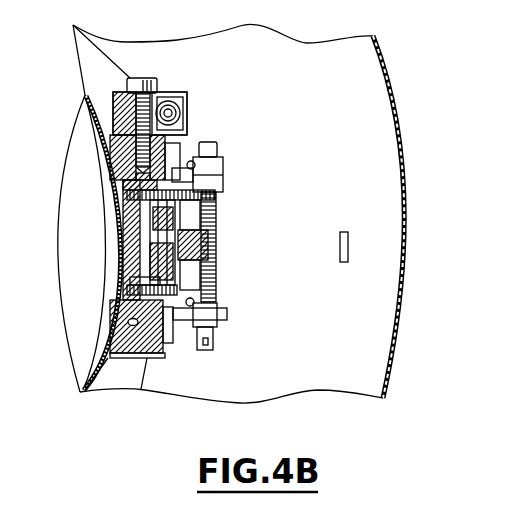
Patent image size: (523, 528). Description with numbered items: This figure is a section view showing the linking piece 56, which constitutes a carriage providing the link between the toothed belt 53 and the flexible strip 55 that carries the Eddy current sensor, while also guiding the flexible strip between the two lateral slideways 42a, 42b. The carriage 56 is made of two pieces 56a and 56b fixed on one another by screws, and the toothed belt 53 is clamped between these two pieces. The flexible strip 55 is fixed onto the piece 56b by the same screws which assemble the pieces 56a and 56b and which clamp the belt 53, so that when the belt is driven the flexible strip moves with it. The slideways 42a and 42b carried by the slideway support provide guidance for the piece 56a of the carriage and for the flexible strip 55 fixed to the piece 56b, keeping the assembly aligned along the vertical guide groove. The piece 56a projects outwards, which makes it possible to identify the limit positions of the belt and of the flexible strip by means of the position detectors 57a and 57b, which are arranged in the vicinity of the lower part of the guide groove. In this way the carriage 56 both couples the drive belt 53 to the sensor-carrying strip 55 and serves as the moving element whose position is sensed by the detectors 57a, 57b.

The flexible strip 55 is at (117, 207).
The piece 56b is at (117, 277).
The lateral slideway 42a is at (187, 320).
The lateral slideway 42b is at (208, 211).
The toothed belt 53 is at (216, 228).
The piece 56a is at (218, 240).
The linking piece 56 is at (233, 258).
The position detector 57a is at (214, 178).
The position detector 57b is at (222, 312).